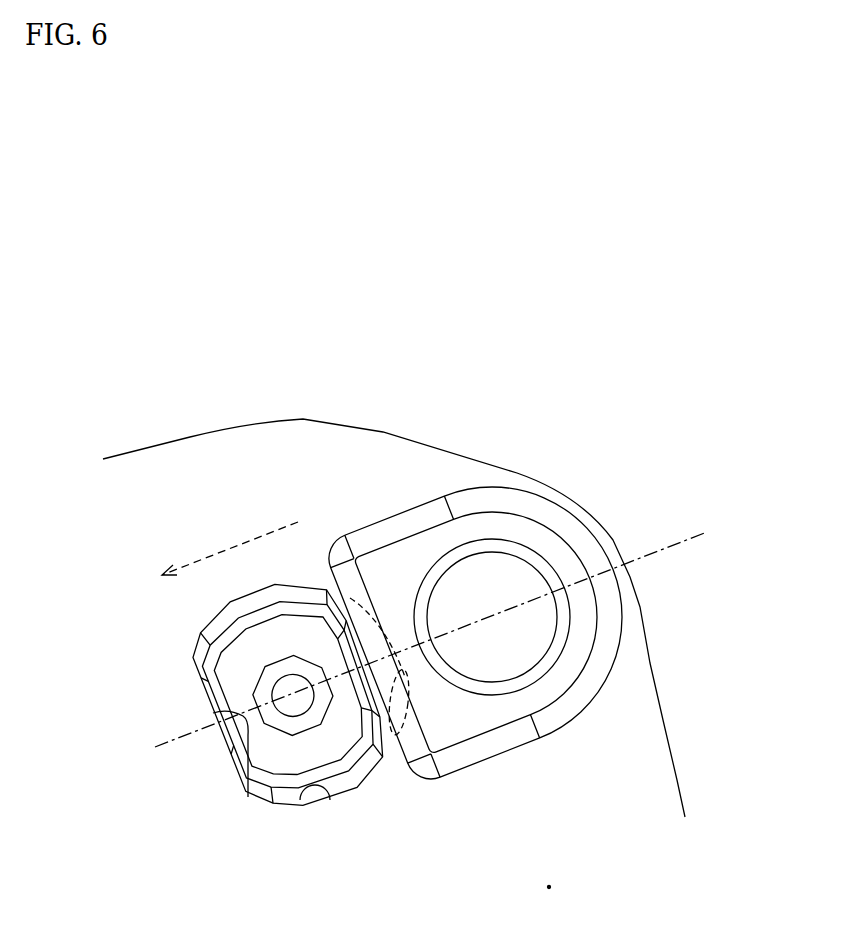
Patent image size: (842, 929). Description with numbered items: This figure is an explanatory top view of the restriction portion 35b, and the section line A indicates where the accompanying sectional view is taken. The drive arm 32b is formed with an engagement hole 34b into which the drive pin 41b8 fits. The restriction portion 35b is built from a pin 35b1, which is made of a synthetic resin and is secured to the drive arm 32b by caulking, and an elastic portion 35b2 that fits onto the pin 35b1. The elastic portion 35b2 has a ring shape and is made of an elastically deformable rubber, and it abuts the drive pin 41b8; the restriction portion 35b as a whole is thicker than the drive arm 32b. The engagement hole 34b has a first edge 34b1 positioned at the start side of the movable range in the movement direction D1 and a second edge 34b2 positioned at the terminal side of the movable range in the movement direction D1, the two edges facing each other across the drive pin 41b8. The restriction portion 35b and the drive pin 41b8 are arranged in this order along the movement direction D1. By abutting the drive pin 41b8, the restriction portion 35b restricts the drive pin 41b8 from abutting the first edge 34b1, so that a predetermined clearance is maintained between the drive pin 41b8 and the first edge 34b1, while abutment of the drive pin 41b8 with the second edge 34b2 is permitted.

The drive arm 32b is at (677, 780).
The engagement hole 34b is at (330, 800).
The first edge 34b1 is at (408, 735).
The second edge 34b2 is at (248, 797).
The restriction portion 35b is at (570, 617).
The pin 35b1 is at (525, 640).
The elastic portion 35b2 is at (565, 705).
The drive pin 41b8 is at (237, 672).
The movement direction D1 is at (210, 555).
The line A- A is at (158, 748).